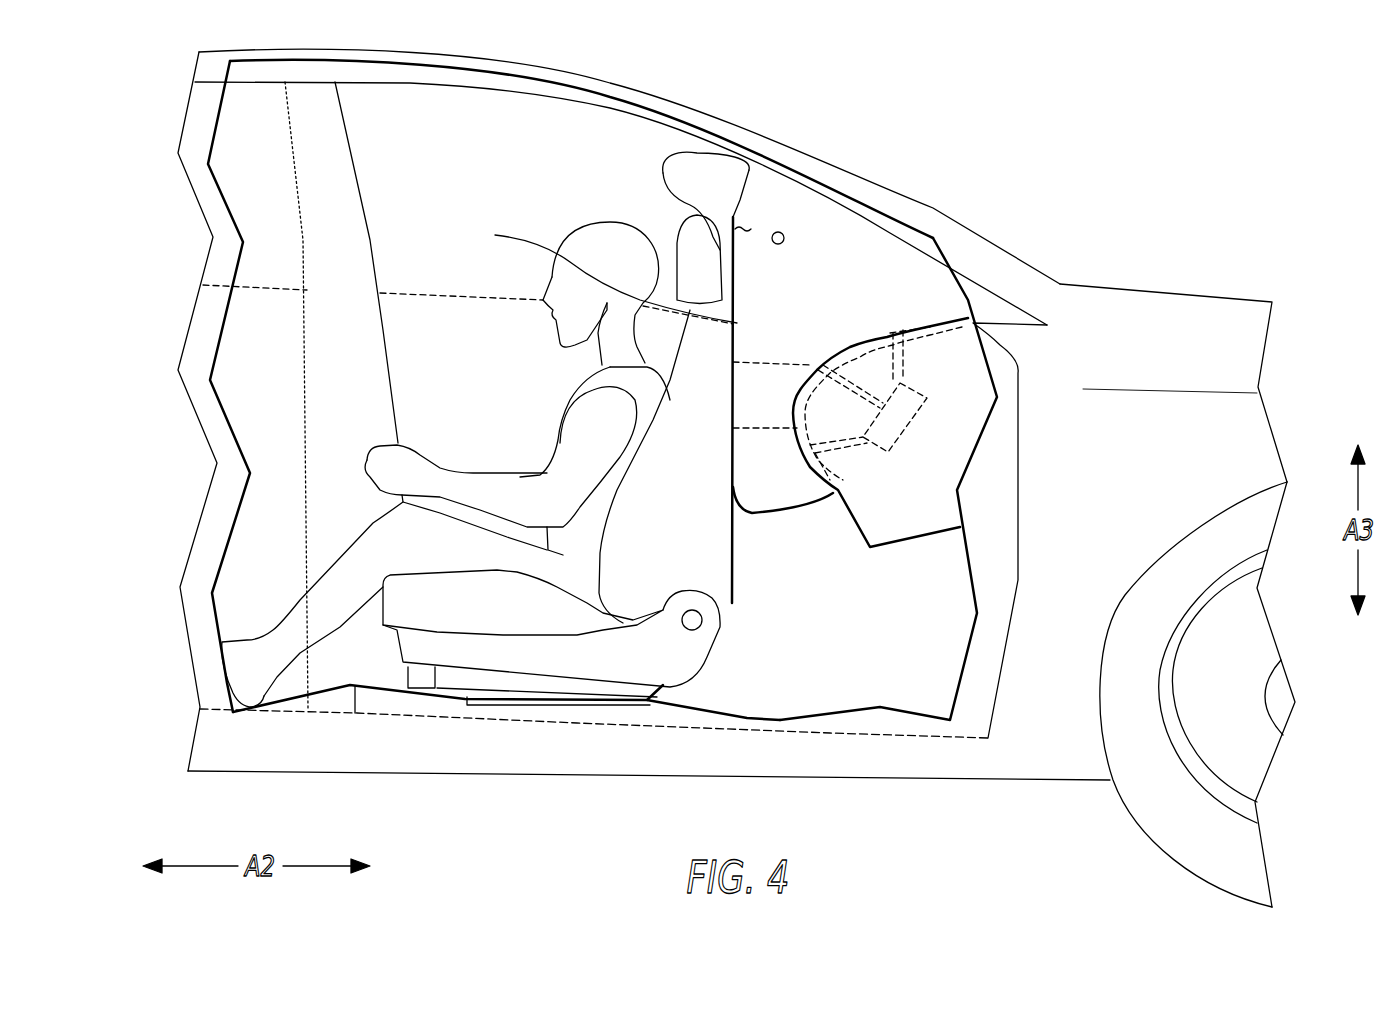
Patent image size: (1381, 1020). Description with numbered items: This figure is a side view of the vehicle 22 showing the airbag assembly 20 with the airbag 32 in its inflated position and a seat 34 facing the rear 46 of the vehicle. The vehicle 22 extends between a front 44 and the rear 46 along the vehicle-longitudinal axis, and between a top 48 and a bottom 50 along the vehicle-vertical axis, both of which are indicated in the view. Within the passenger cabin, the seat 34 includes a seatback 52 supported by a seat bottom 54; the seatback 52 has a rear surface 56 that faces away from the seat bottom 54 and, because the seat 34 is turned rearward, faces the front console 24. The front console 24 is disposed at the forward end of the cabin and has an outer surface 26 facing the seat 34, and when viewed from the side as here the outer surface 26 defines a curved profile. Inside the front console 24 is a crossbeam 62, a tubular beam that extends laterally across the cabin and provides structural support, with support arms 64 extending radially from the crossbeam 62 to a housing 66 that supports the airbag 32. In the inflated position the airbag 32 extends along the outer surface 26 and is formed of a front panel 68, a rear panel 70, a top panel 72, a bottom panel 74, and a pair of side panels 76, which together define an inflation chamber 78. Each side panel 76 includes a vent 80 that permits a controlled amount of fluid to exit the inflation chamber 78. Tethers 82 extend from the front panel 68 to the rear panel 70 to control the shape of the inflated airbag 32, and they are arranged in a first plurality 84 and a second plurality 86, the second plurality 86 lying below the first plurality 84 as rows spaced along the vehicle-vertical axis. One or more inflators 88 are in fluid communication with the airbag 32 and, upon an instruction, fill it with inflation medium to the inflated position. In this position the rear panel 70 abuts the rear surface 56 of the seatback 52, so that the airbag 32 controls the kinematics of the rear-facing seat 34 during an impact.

The airbag assembly 20 is at (891, 178).
The vehicle 22 is at (590, 72).
The front console 24 is at (967, 337).
The outer surface 26 is at (838, 497).
The airbag 32 is at (743, 187).
The seat 34 is at (470, 402).
The front 44 is at (1220, 295).
The rear 46 is at (205, 397).
The top 48 is at (513, 55).
The bottom 50 is at (520, 781).
The seatback 52 is at (653, 442).
The seat bottom 54 is at (507, 655).
The rear surface 56 is at (707, 567).
The crossbeam 62 is at (908, 427).
The support arms 64 is at (903, 350).
The housing 66 is at (843, 358).
The front panel 68 is at (863, 335).
The rear panel 70 is at (601, 271).
The top panel 72 is at (697, 150).
The bottom panel 74 is at (778, 513).
The side panels 76 is at (744, 213).
The inflation chamber 78 is at (817, 220).
The vent 80 is at (784, 243).
The tethers 82 is at (771, 394).
The first plurality of tethers 84 is at (766, 362).
The second plurality of tethers 86 is at (763, 430).
The inflator 88 is at (903, 328).